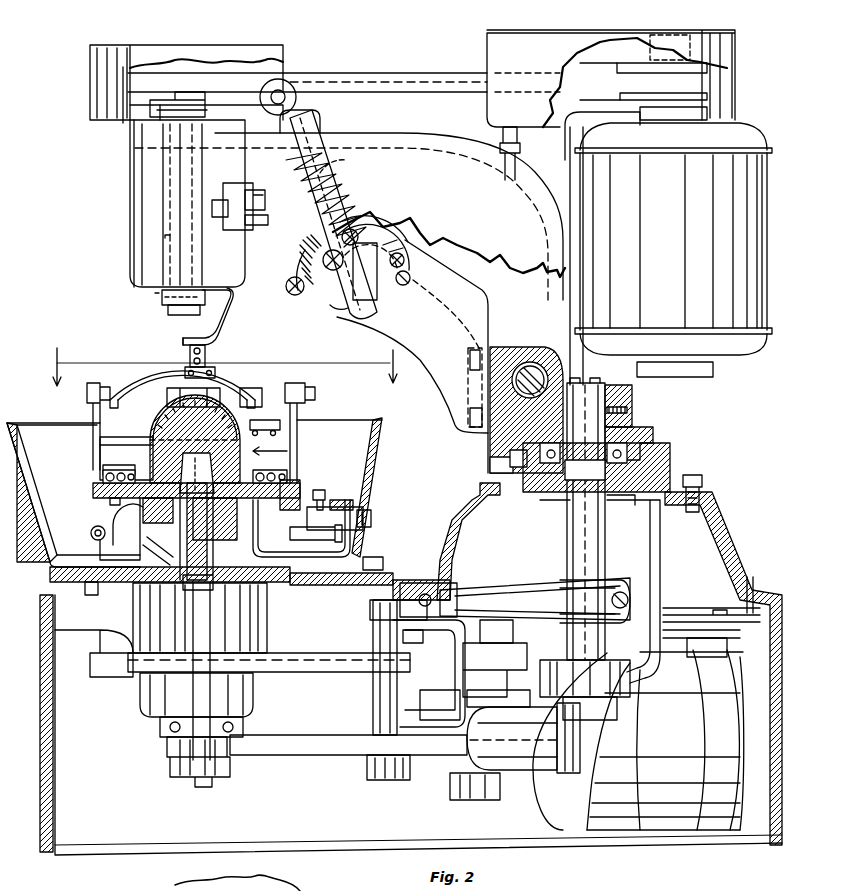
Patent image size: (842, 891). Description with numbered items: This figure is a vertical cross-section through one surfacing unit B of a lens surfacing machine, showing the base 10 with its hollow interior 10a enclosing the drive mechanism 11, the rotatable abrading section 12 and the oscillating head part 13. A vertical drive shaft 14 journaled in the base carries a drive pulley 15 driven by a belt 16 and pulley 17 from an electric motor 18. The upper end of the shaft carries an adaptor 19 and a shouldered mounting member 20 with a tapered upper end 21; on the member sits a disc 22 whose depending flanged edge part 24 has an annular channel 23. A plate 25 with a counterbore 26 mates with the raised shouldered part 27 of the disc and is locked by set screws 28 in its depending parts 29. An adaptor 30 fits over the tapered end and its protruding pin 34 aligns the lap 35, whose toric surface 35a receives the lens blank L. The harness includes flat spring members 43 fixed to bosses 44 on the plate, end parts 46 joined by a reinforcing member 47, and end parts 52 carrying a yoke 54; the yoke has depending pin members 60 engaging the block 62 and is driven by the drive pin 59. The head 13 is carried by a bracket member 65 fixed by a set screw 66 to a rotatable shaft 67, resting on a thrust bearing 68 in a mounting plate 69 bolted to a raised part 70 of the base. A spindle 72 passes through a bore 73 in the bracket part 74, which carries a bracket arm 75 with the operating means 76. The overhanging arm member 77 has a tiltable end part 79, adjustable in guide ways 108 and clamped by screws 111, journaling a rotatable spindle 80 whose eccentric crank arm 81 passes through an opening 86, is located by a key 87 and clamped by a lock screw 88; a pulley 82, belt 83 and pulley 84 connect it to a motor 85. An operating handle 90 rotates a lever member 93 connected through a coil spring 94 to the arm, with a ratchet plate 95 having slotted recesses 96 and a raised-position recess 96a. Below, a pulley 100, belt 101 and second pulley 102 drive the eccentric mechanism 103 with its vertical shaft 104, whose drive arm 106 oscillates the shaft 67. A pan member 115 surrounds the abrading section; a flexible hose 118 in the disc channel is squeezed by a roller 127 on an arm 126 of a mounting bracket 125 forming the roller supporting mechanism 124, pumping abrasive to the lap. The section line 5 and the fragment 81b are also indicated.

The base 10 is at (45, 835).
The hollow interior 10a is at (132, 835).
The drive mechanism 11 is at (318, 777).
The abrading section 12 is at (290, 447).
The head part 13 is at (366, 116).
The drive shaft 14 is at (192, 602).
The drive pulley 15 is at (228, 648).
The belt 16 is at (282, 668).
The pulley 17 is at (508, 670).
The electric motor 18 is at (565, 800).
The adaptor 19 is at (258, 537).
The shouldered mounting member 20 is at (153, 549).
The tapered upper end 21 is at (222, 462).
The disc 22 is at (110, 510).
The annular channel 23 is at (103, 545).
The depending flanged edge part 24 is at (103, 540).
The plate 25 is at (292, 478).
The circular counterbore 26 is at (246, 512).
The raised circular shouldered part 27 is at (168, 505).
The set screws 28 is at (103, 488).
The depending parts 29 is at (110, 502).
The adaptor 30 is at (152, 460).
The protruding pin 34 is at (210, 445).
The lap 35 is at (282, 422).
The toric surface 35a is at (262, 392).
The flat spring members 43 is at (105, 480).
The machined bosses 44 is at (103, 484).
The end parts 46 is at (100, 450).
The reinforcing member 47 is at (172, 421).
The end part 52 is at (95, 385).
The yoke 54 is at (162, 380).
The drive pin 59 is at (200, 370).
The depending pin members 60 is at (215, 376).
The block 62 is at (180, 397).
The bracket member 65 is at (634, 434).
The set screw 66 is at (630, 407).
The rotatable shaft 67 is at (577, 537).
The thrust bearing 68 is at (666, 466).
The mounting plate 69 is at (702, 488).
The raised part 70 is at (725, 533).
The spindle 72 is at (512, 403).
The bore 73 is at (505, 440).
The part of the bracket 74 is at (540, 355).
The bracket arm 75 is at (446, 362).
The operating means 76 is at (313, 318).
The overhanging arm member 77 is at (420, 157).
The tiltable end part 79 is at (130, 188).
The rotatable spindle 80 is at (165, 238).
The eccentric crank arm 81 is at (220, 316).
The hook arm (bottom fragment) 81b is at (237, 883).
The pulley 82 is at (240, 68).
The belt 83 is at (412, 80).
The pulley 84 is at (620, 60).
The electric motor 85 is at (750, 206).
The opening 86 is at (163, 300).
The key 87 is at (207, 291).
The lock screw 88 is at (180, 312).
The operating handle 90 is at (330, 212).
The lever member 93 is at (378, 291).
The coil spring 94 is at (336, 162).
The ratchet plate 95 is at (295, 297).
The slotted recesses 96 is at (290, 283).
The recess 96a is at (392, 233).
The pulley 100 is at (232, 755).
The belt 101 is at (280, 743).
The second pulley 102 is at (357, 760).
The eccentric mechanism 103 is at (412, 658).
The vertical shaft 104 is at (378, 691).
The drive arm 106 is at (522, 590).
The guide ways 108 is at (246, 196).
The screws 111 is at (212, 208).
The pan member 115 is at (372, 447).
The flexible hose 118 is at (90, 534).
The roller supporting mechanism 124 is at (360, 550).
The mounting bracket 125 is at (360, 490).
The arm 126 is at (372, 507).
The roller 127 is at (304, 540).
The section line 5- 5 is at (223, 357).
The surfacing unit B is at (85, 269).
The lens blank L is at (257, 422).